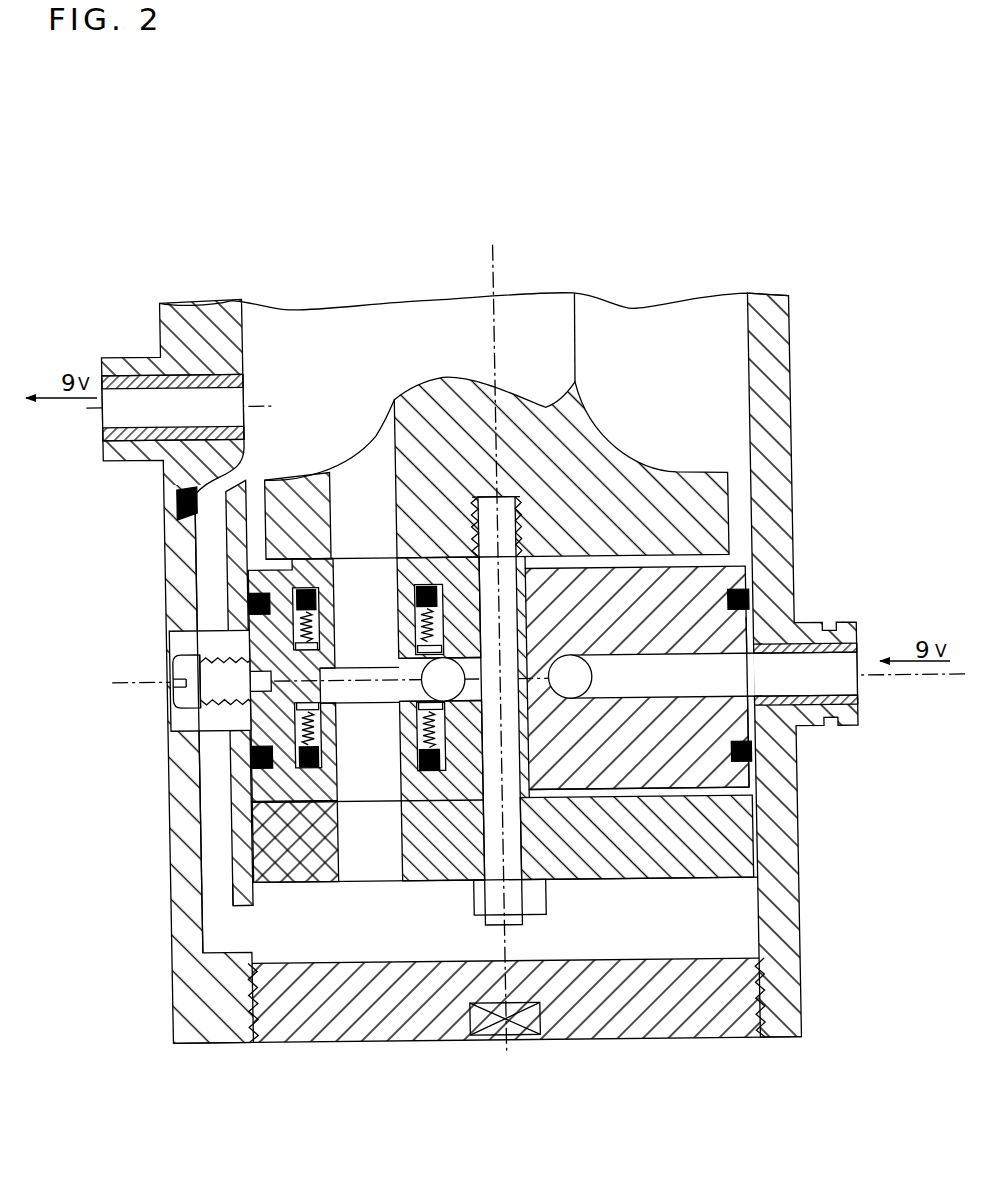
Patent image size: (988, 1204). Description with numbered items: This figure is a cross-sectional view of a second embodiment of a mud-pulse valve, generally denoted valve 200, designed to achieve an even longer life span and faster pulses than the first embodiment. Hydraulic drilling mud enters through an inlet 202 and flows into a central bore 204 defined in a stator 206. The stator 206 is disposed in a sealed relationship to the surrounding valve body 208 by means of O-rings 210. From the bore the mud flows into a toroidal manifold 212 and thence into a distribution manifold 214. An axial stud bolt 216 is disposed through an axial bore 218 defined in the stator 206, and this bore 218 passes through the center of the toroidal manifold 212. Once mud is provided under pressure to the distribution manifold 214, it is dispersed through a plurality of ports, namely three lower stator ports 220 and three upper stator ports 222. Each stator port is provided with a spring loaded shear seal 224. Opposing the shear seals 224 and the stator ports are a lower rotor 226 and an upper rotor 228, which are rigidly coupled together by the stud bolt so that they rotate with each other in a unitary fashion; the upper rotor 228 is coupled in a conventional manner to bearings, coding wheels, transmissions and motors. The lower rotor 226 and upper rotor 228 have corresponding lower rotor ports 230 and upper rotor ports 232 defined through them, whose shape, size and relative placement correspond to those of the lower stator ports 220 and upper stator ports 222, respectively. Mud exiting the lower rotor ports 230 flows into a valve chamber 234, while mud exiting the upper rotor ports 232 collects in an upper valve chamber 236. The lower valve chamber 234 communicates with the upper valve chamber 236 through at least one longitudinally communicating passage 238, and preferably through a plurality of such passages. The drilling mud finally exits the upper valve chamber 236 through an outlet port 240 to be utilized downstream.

The valve 200 is at (782, 120).
The inlet 202 is at (848, 677).
The central bore 204 is at (745, 639).
The stator 206 is at (728, 740).
The valve body 208 is at (824, 667).
The O-rings 210 is at (480, 673).
The toroidal manifold 212 is at (672, 724).
The distribution manifold 214 is at (160, 693).
The axial stud bolt 216 is at (436, 606).
The axial bore 218 is at (703, 630).
The lower stator ports 220 is at (147, 754).
The upper stator ports 222 is at (235, 663).
The spring loaded shear seal 224 is at (166, 690).
The lower rotor 226 is at (720, 846).
The upper rotor 228 is at (524, 392).
The lower rotor ports 230 is at (374, 941).
The upper rotor ports 232 is at (193, 515).
The valve chamber 234 is at (505, 1070).
The upper valve chamber 236 is at (424, 243).
The longitudinally communicating passage 238 is at (168, 913).
The outlet port 240 is at (151, 350).